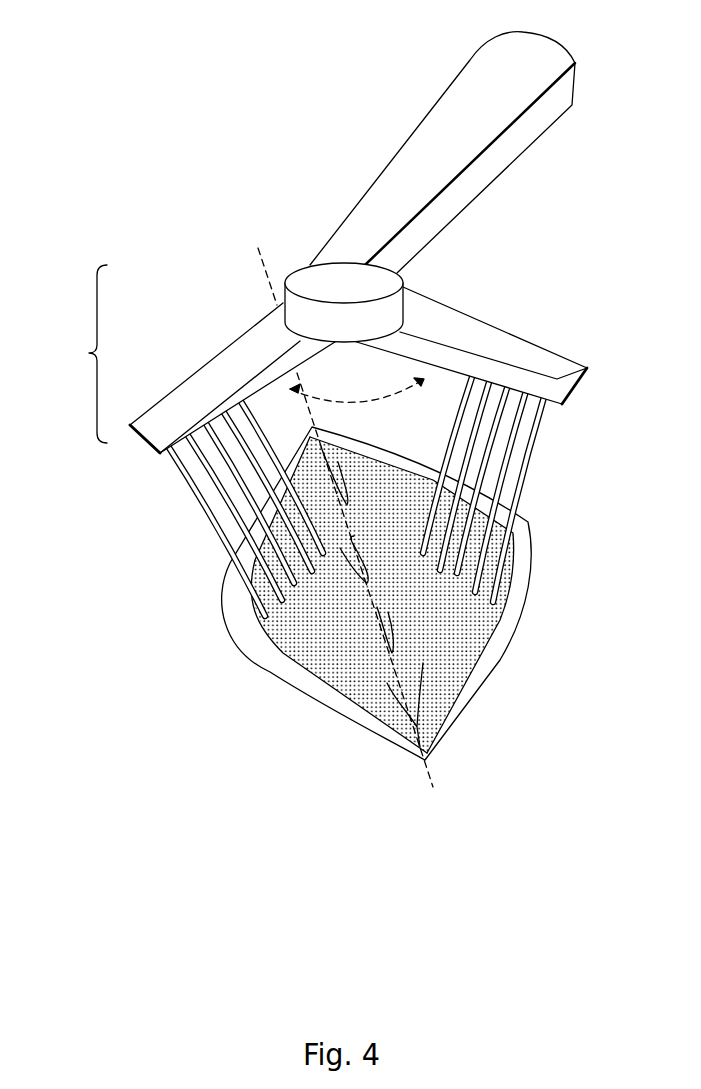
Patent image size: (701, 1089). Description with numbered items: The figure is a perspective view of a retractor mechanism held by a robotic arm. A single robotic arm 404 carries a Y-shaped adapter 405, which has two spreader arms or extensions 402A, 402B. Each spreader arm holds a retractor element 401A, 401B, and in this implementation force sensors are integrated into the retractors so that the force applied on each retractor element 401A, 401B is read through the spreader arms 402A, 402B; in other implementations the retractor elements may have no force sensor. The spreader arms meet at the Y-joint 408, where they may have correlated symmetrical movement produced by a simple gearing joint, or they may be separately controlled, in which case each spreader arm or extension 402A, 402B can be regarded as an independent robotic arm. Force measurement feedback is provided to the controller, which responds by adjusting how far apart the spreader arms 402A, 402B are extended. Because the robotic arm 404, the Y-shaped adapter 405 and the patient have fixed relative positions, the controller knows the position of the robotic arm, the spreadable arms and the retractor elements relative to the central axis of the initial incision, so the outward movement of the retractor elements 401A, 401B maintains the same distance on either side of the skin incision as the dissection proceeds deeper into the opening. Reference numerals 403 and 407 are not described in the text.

The retractor element 401A is at (533, 487).
The retractor element 401B is at (198, 500).
The spreader arm 402A is at (483, 318).
The spreader arm 402B is at (223, 340).
The flexible sheet 403 is at (353, 670).
The robotic arm 404 is at (402, 143).
The Y-shaped adapter 405 is at (64, 354).
The rotation axis 407 is at (258, 248).
The Y-joint 408 is at (310, 262).